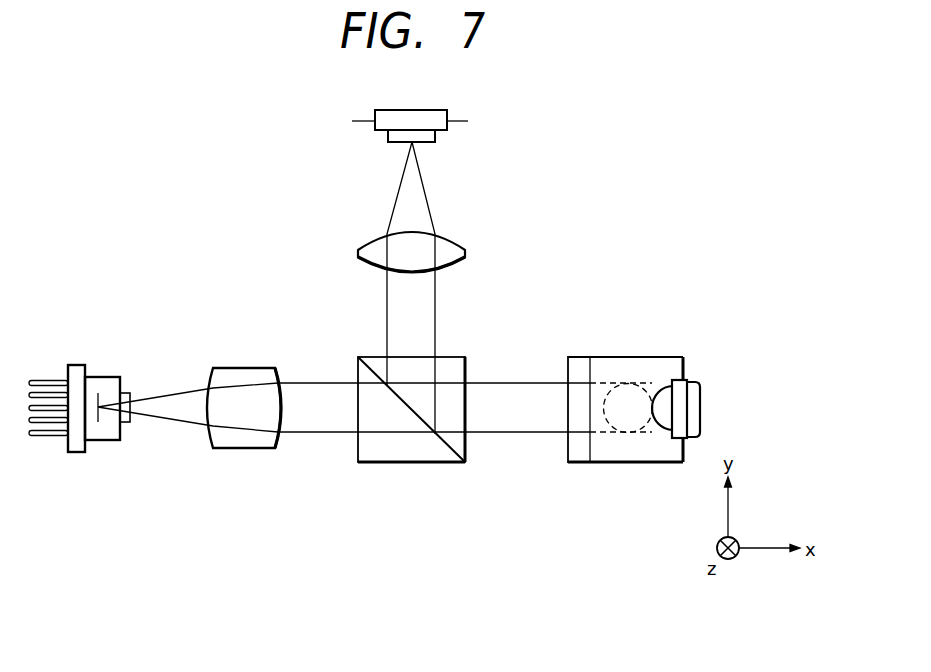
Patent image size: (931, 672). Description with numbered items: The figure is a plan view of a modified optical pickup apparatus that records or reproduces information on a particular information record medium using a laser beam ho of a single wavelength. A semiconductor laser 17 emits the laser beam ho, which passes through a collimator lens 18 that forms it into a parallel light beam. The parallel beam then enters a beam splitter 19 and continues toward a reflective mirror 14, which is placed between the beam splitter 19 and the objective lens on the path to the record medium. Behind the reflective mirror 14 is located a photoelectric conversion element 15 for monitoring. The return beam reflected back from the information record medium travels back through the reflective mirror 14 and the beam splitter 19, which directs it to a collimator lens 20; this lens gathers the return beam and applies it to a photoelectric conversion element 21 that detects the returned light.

The reflective mirror 14 is at (632, 462).
The photoelectric conversion element for monitor 15 is at (700, 402).
The semiconductor laser 17 is at (103, 440).
The collimator lens 18 is at (237, 449).
The beam splitter 19 is at (443, 462).
The collimator lens 20 is at (463, 248).
The photoelectric conversion element 21 is at (435, 110).
The laser beam ho is at (170, 400).